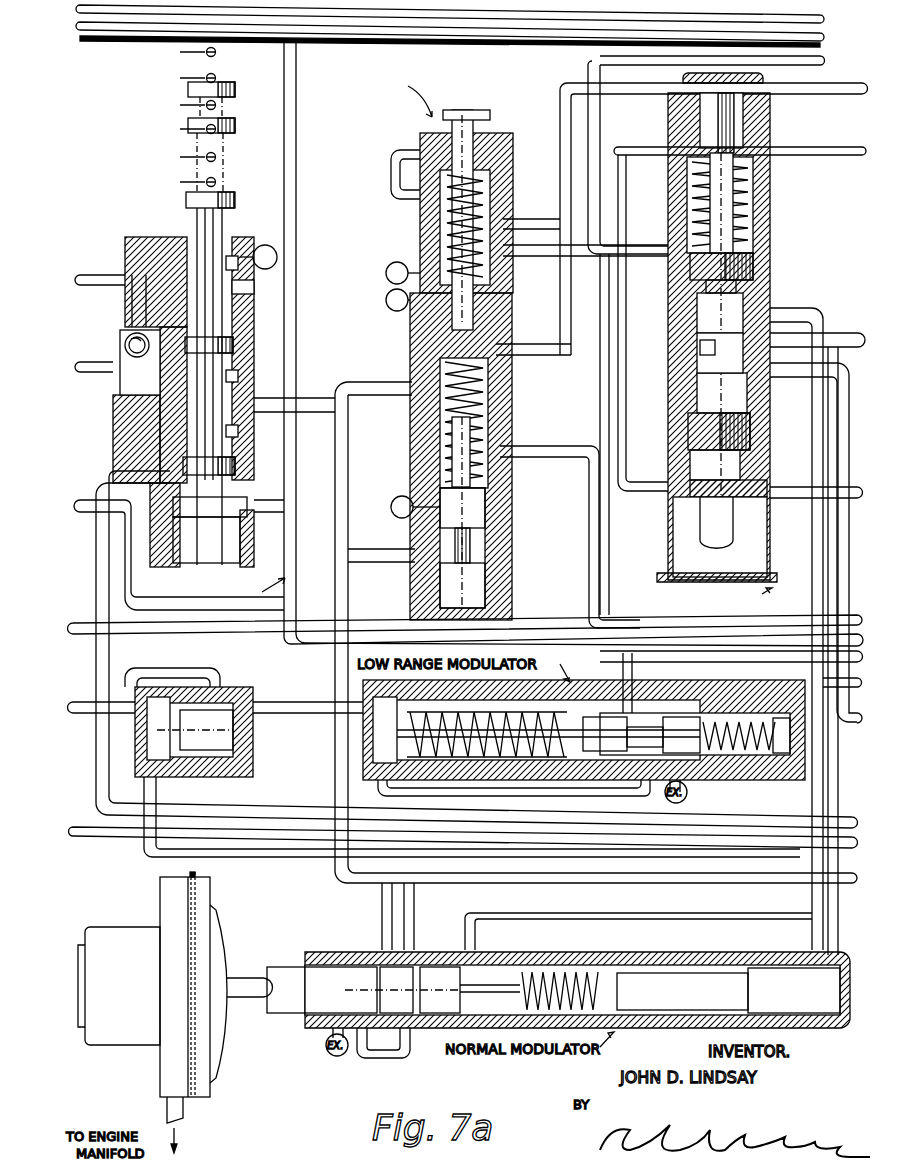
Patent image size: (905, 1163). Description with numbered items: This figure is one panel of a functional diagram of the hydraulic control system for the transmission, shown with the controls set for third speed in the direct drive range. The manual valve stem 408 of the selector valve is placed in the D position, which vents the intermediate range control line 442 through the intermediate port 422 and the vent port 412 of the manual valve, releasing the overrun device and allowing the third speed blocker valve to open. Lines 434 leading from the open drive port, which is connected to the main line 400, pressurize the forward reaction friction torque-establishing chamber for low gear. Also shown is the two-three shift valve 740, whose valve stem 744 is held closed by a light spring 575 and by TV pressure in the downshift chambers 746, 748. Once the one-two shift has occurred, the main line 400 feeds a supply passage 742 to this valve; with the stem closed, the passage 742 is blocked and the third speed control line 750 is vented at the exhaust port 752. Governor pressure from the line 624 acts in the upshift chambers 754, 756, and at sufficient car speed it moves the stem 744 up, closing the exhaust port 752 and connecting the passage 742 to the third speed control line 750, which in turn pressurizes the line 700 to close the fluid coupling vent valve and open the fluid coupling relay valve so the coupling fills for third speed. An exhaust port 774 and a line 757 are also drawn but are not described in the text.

The line 434 is at (112, 42).
The line 700 is at (132, 38).
The manual valve stem 408 is at (228, 84).
The exhaust port 774 is at (272, 250).
The intermediate range control line 442 is at (118, 470).
The main line 400 is at (106, 505).
The intermediate port 422 is at (240, 482).
The vent port 412 is at (180, 548).
The downshift chamber 746 is at (745, 110).
The downshift chamber 748 is at (692, 208).
The spring 575 is at (692, 233).
The 2-3 shift valve 740 is at (785, 231).
The upshift chamber 756 is at (752, 298).
The line 624 is at (790, 303).
The supply passage 742 is at (822, 327).
The valve stem 744 is at (700, 360).
The third speed control line 750 is at (752, 395).
The exhaust port 752 is at (772, 412).
The upshift chamber 754 is at (680, 548).
The throttle valve line 757 is at (508, 452).